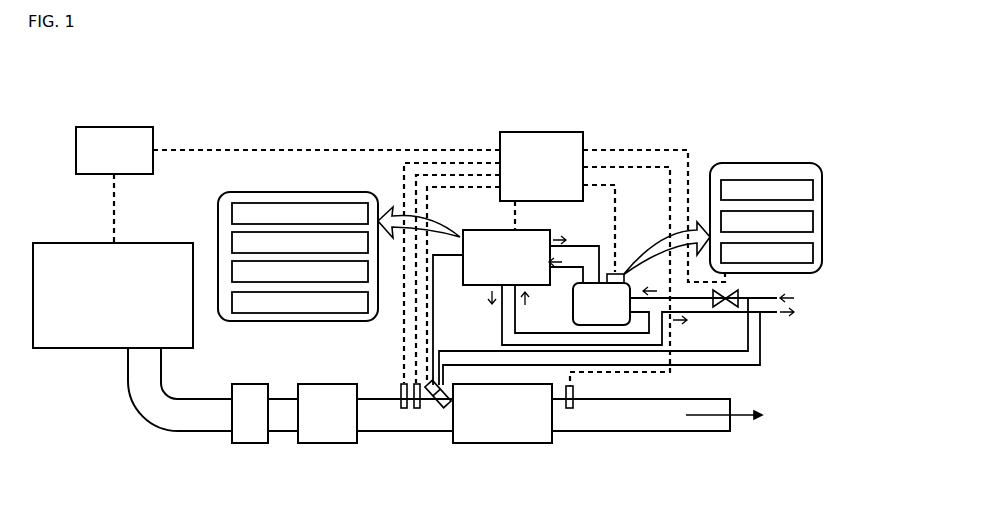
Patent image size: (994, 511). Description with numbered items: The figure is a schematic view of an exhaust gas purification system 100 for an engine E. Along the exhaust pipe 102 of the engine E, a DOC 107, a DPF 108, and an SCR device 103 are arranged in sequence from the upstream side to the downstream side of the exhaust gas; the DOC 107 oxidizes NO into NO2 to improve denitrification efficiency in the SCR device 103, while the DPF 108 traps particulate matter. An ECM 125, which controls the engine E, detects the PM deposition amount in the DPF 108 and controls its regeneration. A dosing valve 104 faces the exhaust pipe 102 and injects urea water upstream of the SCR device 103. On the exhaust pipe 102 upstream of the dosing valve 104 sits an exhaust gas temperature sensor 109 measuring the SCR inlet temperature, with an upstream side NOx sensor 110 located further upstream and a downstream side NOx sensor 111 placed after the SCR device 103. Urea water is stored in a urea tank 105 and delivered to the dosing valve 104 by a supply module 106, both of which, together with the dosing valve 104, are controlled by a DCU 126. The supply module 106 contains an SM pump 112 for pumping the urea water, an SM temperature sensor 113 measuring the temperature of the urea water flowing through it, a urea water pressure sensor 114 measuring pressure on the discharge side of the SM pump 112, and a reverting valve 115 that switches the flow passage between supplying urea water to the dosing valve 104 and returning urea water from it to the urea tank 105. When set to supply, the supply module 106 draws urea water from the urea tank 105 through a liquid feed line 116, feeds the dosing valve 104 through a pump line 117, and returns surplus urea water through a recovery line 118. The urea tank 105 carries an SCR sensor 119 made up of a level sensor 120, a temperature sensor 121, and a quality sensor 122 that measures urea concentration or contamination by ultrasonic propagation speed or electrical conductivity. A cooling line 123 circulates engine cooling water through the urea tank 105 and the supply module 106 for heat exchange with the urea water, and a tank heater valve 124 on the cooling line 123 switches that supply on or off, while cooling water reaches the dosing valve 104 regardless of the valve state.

The exhaust gas purification system 100 is at (811, 101).
The exhaust pipe 102 is at (188, 431).
The SCR device 103 is at (503, 444).
The dosing valve 104 is at (440, 406).
The urea tank 105 is at (590, 310).
The supply module 106 is at (485, 230).
The DOC 107 is at (252, 444).
The DPF 108 is at (330, 444).
The exhaust gas temperature sensor 109 is at (417, 409).
The upstream side NOx sensor 110 is at (403, 409).
The downstream side NOx sensor 111 is at (570, 409).
The SM pump 112 is at (261, 203).
The SM temperature sensor 113 is at (232, 234).
The urea water pressure sensor 114 is at (232, 283).
The reverting valve 115 is at (262, 313).
The liquid feed line 116 is at (563, 270).
The pump line 117 is at (433, 310).
The recovery line 118 is at (590, 246).
The SCR sensor 119 is at (620, 274).
The level sensor 120 is at (813, 190).
The temperature sensor 121 is at (813, 220).
The quality sensor 122 is at (813, 253).
The cooling line 123 is at (768, 314).
The tank heater valve 124 is at (722, 308).
The ECM 125 is at (116, 127).
The DCU 126 is at (543, 132).
The engine E is at (86, 349).